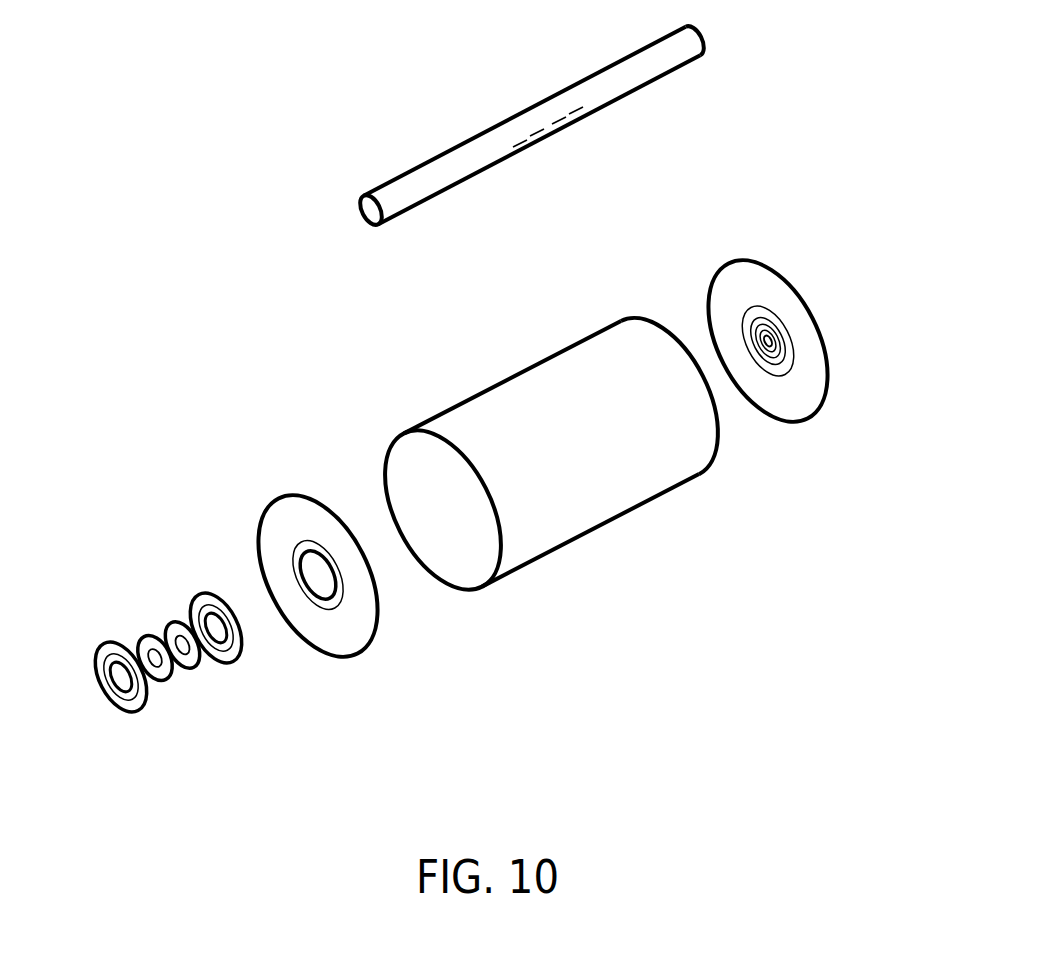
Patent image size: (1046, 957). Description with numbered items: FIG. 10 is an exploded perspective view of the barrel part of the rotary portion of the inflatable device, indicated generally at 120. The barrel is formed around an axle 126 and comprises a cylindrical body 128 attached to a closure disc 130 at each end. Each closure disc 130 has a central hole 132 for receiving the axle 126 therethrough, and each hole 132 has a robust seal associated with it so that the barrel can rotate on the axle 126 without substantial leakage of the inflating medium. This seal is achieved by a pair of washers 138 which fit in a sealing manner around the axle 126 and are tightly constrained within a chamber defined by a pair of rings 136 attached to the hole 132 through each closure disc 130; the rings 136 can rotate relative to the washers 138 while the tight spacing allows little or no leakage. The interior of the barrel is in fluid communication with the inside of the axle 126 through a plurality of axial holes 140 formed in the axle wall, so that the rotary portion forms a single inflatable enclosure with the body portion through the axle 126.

The roller assembly 120 is at (207, 117).
The axle 126 is at (390, 178).
The cylindrical body 128 is at (617, 318).
The closure disc 130 is at (778, 290).
The central hole 132 is at (342, 602).
The ring 136 is at (133, 708).
The washer 138 is at (152, 676).
The axial hole 140 is at (517, 145).